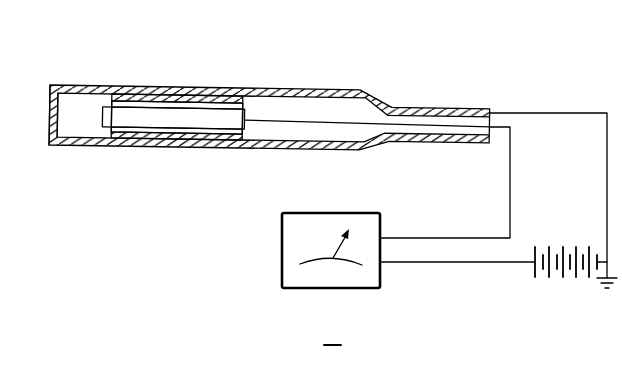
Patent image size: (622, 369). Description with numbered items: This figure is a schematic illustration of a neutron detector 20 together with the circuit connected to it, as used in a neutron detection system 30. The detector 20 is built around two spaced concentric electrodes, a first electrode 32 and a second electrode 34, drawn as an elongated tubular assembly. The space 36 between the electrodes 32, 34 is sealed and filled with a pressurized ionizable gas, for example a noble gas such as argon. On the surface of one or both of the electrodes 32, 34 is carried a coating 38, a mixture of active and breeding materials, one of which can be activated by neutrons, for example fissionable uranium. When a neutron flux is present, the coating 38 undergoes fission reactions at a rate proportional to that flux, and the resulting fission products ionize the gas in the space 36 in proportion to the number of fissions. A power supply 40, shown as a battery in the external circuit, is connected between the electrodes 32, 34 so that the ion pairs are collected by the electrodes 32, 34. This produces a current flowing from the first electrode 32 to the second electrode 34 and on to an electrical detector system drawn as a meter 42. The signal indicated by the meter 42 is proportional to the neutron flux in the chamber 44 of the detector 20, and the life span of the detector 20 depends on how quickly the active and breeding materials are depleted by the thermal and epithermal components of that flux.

The neutron detector 20 is at (338, 90).
The neutron detection system 30 is at (532, 57).
The first electrode 32 is at (90, 85).
The second electrode 34 is at (143, 115).
The space 36 is at (180, 104).
The coating of fissionable material 38 is at (221, 100).
The power supply 40 is at (533, 272).
The meter 42 is at (281, 248).
The chamber 44 is at (272, 110).